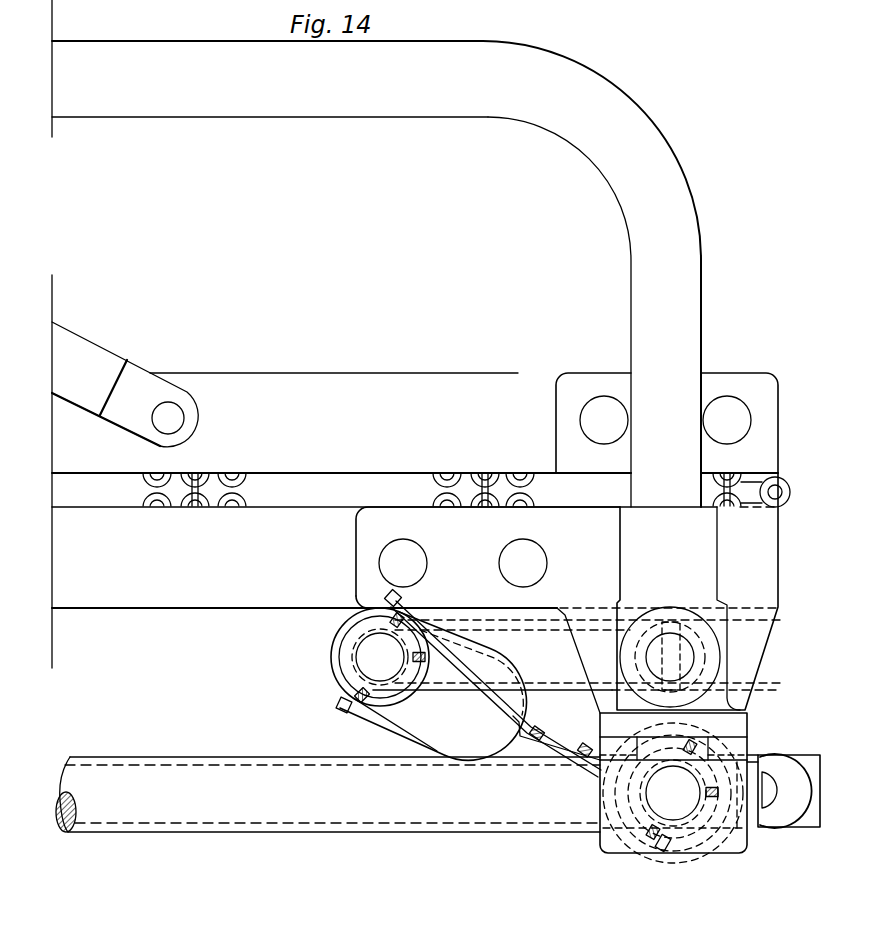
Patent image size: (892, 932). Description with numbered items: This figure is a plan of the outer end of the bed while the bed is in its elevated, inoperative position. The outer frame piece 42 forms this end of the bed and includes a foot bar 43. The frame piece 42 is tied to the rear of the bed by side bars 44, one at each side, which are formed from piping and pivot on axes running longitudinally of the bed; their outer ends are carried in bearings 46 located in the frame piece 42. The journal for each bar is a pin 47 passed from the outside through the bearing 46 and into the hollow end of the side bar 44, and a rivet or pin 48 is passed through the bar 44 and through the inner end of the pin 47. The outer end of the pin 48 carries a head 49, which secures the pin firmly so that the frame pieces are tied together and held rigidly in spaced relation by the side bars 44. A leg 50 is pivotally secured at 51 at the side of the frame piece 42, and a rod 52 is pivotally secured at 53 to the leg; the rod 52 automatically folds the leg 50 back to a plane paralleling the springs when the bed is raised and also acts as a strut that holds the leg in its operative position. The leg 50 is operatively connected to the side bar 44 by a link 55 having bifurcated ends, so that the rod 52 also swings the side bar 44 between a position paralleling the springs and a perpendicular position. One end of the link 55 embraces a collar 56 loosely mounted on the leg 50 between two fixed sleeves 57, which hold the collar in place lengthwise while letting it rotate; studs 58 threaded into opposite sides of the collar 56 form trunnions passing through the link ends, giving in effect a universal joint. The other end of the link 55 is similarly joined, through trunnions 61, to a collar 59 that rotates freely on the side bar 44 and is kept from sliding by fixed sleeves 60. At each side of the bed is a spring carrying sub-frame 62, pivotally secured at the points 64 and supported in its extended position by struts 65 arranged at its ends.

The outer frame piece 42 is at (177, 600).
The foot bar 43 is at (677, 299).
The side bars 44 is at (360, 657).
The bearings 46 is at (715, 703).
The pin 47 is at (697, 648).
The rivets or pins 48 is at (683, 643).
The heads 49 is at (708, 665).
The legs 50 is at (692, 825).
The leg pivot 51 is at (747, 751).
The rods 52 is at (783, 815).
The rod pivot 53 is at (775, 778).
The link 55 is at (390, 598).
The collar 56 is at (663, 852).
The fixed sleeves 57 is at (683, 852).
The studs 58 is at (687, 745).
The collar 59 is at (336, 669).
The fixed sleeves 60 is at (347, 676).
The trunnions 61 is at (413, 607).
The spring carrying sub-frame 62 is at (288, 383).
The pivot points 64 is at (784, 488).
The struts 65 is at (84, 351).